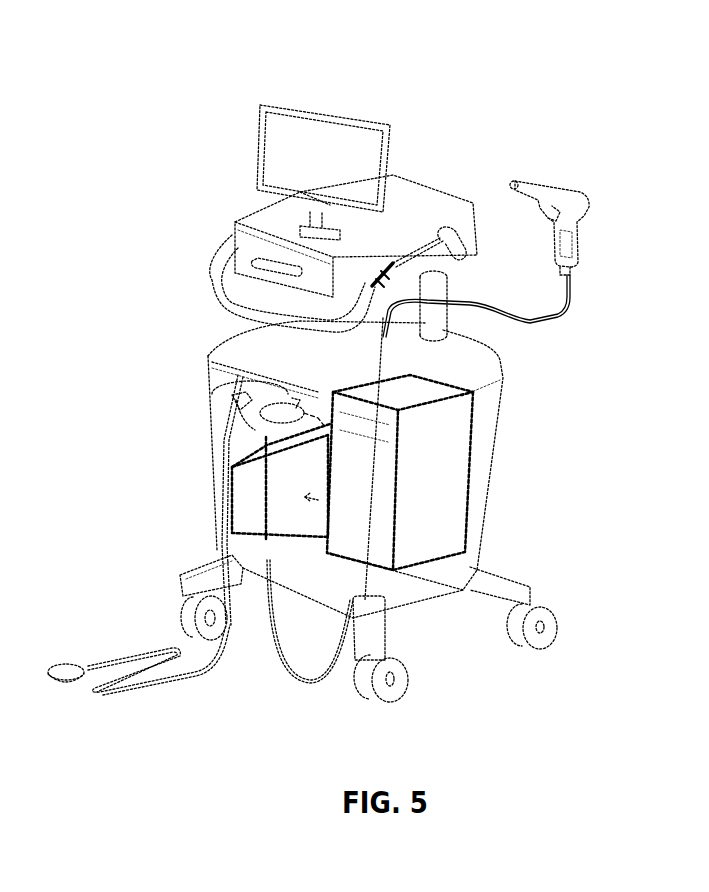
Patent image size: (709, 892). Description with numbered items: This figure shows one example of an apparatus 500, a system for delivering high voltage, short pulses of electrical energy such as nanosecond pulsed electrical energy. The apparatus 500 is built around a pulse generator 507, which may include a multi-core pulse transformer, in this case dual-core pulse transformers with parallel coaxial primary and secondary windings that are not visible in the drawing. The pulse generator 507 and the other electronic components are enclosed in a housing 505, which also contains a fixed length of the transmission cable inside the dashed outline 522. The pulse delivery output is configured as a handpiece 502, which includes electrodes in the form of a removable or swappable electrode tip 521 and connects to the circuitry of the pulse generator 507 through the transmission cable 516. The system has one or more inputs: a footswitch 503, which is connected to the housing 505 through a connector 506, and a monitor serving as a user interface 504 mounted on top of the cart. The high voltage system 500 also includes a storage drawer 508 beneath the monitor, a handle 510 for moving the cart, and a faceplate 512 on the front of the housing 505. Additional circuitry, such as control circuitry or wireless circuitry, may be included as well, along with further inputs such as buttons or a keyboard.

The apparatus 500 is at (462, 122).
The handpiece 502 is at (550, 178).
The footswitch 503 is at (65, 662).
The user interface 504 is at (325, 115).
The housing 505 is at (480, 412).
The connector 506 is at (207, 390).
The pulse generator 507 is at (240, 508).
The storage drawer 508 is at (235, 238).
The handle 510 is at (212, 296).
The faceplate 512 is at (248, 447).
The transmission cable 516 is at (512, 322).
The electrode tip 521 is at (515, 181).
The dashed outline 522 is at (430, 486).